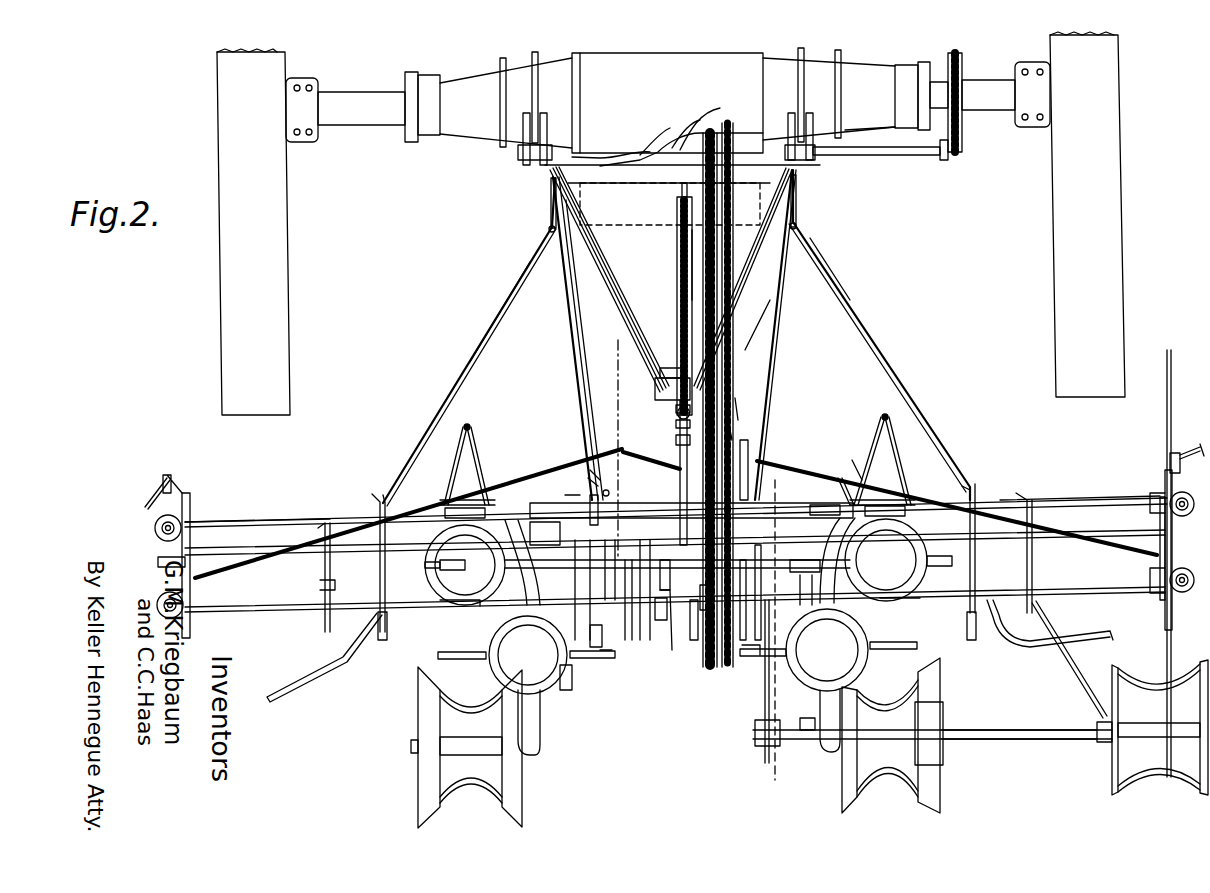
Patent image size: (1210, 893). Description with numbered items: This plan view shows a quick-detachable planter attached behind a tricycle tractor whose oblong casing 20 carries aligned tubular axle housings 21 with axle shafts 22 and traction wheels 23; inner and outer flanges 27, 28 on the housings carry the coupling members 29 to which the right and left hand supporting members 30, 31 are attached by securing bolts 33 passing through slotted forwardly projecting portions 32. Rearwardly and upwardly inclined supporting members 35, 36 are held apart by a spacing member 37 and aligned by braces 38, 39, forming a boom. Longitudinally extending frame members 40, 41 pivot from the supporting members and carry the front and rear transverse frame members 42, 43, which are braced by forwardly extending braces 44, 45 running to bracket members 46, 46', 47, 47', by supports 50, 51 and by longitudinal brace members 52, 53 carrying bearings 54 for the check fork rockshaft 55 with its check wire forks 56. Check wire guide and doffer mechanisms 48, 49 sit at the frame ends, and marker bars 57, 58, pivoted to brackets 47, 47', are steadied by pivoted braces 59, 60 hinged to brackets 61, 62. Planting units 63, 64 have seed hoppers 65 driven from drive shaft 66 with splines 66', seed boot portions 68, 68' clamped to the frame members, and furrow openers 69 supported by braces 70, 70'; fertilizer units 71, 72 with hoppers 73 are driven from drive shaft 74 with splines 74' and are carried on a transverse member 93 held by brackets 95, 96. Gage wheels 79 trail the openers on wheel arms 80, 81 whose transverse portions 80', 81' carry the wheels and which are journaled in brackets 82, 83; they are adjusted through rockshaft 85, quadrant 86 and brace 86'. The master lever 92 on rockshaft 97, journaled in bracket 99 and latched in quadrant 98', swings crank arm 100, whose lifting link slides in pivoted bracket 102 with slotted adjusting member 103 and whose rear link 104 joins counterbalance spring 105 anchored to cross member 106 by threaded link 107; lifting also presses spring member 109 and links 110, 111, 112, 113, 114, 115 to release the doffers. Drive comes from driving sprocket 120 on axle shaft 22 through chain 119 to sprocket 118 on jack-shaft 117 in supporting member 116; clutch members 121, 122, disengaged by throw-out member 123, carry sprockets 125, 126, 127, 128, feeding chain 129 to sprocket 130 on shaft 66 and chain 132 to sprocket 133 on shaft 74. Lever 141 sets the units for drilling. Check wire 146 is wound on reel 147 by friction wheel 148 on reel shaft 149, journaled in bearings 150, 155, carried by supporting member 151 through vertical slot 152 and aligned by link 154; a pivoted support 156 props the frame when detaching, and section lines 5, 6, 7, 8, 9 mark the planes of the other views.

The oblong casing 20 is at (635, 72).
The tubular axle housings 21 is at (462, 128).
The axle shafts 22 is at (370, 128).
The traction wheels 23 is at (289, 354).
The inner flanges 27 is at (537, 62).
The outer flanges 28 is at (500, 63).
The coupling members 29 is at (523, 152).
The right hand supporting member 30 is at (815, 160).
The left hand supporting member 31 is at (530, 166).
The forwardly projecting portions 32 is at (526, 162).
The securing bolts 33 is at (550, 226).
The right hand supporting member 35 is at (756, 283).
The left hand supporting member 36 is at (596, 292).
The spacing member 37 is at (662, 378).
The right hand brace 38 is at (814, 245).
The left hand brace 39 is at (540, 255).
The right hand longitudinally extending frame member 40 is at (768, 392).
The left hand longitudinally extending frame member 41 is at (576, 366).
The front transversely extending frame member 42 is at (300, 519).
The rear transversely extending frame member 43 is at (290, 611).
The forwardly extending brace 44 is at (880, 352).
The forwardly extending brace 45 is at (470, 351).
The downwardly extending bracket member 46 is at (946, 540).
The downwardly extending bracket member 46' is at (404, 554).
The bracket member 47 is at (965, 633).
The bracket member 47' is at (400, 633).
The right hand check wire guide and doffer mechanism 48 is at (1165, 496).
The left hand check wire guide and doffer mechanism 49 is at (190, 512).
The right hand support 50 is at (745, 645).
The left hand support 51 is at (708, 590).
The right hand brace member 52 is at (1033, 556).
The left hand brace member 53 is at (336, 585).
The bearings 54 is at (320, 552).
The transversely extending rockshaft 55 is at (1093, 505).
The check wire forks 56 is at (158, 532).
The right hand marker bar 57 is at (1080, 640).
The left hand marker bar 58 is at (320, 674).
The pivoted brace 59 is at (1186, 450).
The pivoted brace 60 is at (148, 500).
The bracket 61 is at (1172, 465).
The bracket 62 is at (175, 481).
The right hand planting unit 63 is at (898, 478).
The left hand planting unit 64 is at (479, 478).
The seed hoppers 65 is at (676, 562).
The transversely extending drive shaft 66 is at (404, 557).
The splines 66' is at (676, 577).
The extending portion of seed boot 68 is at (677, 520).
The extending portion of seed boot 68' is at (690, 617).
The runner or furrow opener 69 is at (467, 425).
The brace 70 is at (692, 461).
The brace 70' is at (654, 450).
The fertilizer unit 71 is at (805, 720).
The fertilizer unit 72 is at (590, 687).
The fertilizer hoppers 73 is at (678, 651).
The transversely extending drive shaft 74 is at (678, 664).
The splines 74' is at (677, 666).
The gage wheels 79 is at (560, 792).
The right hand wheel supporting arm 80 is at (792, 589).
The transversely extending portion 80' is at (819, 728).
The left hand wheel supporting arm 81 is at (542, 562).
The transversely extending portion 81' is at (540, 730).
The supporting bracket 82 is at (832, 496).
The supporting bracket 83 is at (540, 520).
The transverse rockshaft 85 is at (842, 603).
The adjusting quadrant 86 is at (656, 633).
The brace 86' is at (668, 590).
The master lever 92 is at (750, 450).
The transverse extending frame member 93 is at (668, 642).
The right hand supporting bracket 95 is at (748, 660).
The left hand supporting bracket 96 is at (650, 662).
The transverse rockshaft 97 is at (680, 480).
The adjusting quadrant 98' is at (843, 500).
The supporting bracket 99 is at (590, 498).
The crank arm 100 is at (746, 378).
The pivoted bracket 102 is at (676, 415).
The adjusting member 103 is at (660, 392).
The pivoted link 104 is at (740, 360).
The spring 105 is at (677, 263).
The front cross member 106 is at (585, 196).
The threaded link member 107 is at (680, 200).
The spring member 109 is at (678, 446).
The link 110 is at (740, 402).
The link 111 is at (595, 470).
The pivoted link member 112 is at (734, 426).
The pivoted link member 113 is at (592, 478).
The transversely extending link 114 is at (858, 470).
The transversely extending link 115 is at (328, 526).
The planter jack-shaft supporting member 116 is at (905, 156).
The jack-shaft 117 is at (875, 132).
The sprocket 118 is at (955, 160).
The chain 119 is at (965, 60).
The driving sprocket 120 is at (962, 86).
The spring pressed clutch member 121 is at (745, 118).
The clutch member 122 is at (735, 120).
The clutch throw-out member 123 is at (660, 185).
The drive sprocket 125 is at (690, 122).
The drive sprocket 126 is at (668, 132).
The drive sprocket 127 is at (648, 152).
The drive sprocket 128 is at (690, 168).
The chain drive 129 is at (760, 320).
The sprocket 130 is at (795, 568).
The chain drive 132 is at (692, 288).
The driven sprocket 133 is at (712, 672).
The lever 141 is at (585, 563).
The check wire 146 is at (1167, 411).
The reel 147 is at (1115, 785).
The friction wheel 148 is at (1000, 729).
The reel shaft 149 is at (1010, 740).
The bearing 150 is at (752, 737).
The longitudinally extending supporting member 151 is at (755, 729).
The vertical slot 152 is at (770, 690).
The link 154 is at (1075, 676).
The bearing 155 is at (1100, 743).
The pivoted support 156 is at (551, 215).
The section line 5 is at (772, 490).
The section line 6 is at (620, 343).
The section line 7 is at (640, 528).
The section line 8 is at (608, 528).
The section line 9 is at (575, 492).